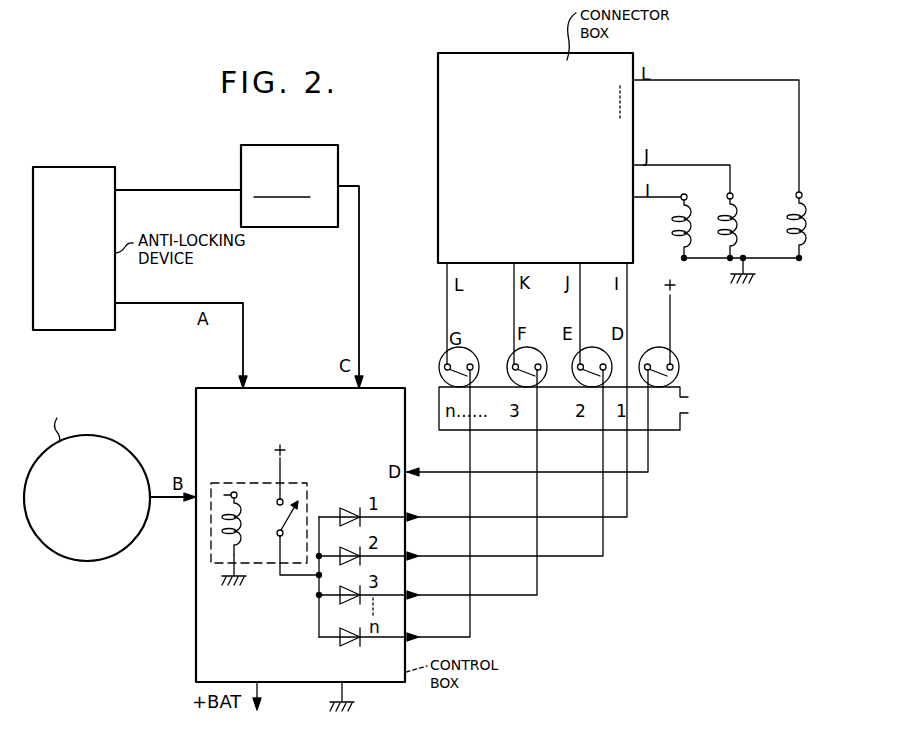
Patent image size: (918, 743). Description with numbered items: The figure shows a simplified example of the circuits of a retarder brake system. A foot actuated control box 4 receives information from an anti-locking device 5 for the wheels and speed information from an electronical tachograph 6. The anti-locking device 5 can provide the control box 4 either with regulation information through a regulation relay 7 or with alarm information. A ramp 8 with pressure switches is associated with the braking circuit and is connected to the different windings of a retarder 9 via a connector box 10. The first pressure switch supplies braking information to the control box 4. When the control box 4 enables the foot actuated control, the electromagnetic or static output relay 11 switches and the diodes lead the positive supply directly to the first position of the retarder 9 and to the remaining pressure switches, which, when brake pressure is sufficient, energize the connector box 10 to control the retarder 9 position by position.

The control box 4 is at (203, 598).
The anti-locking device 5 is at (76, 190).
The electronical tachograph 6 is at (110, 472).
The regulation relay 7 is at (317, 166).
The ramp with pressure switches 8 is at (686, 364).
The retarder 9 is at (742, 190).
The connector box 10 is at (510, 85).
The output relay 11 is at (290, 483).